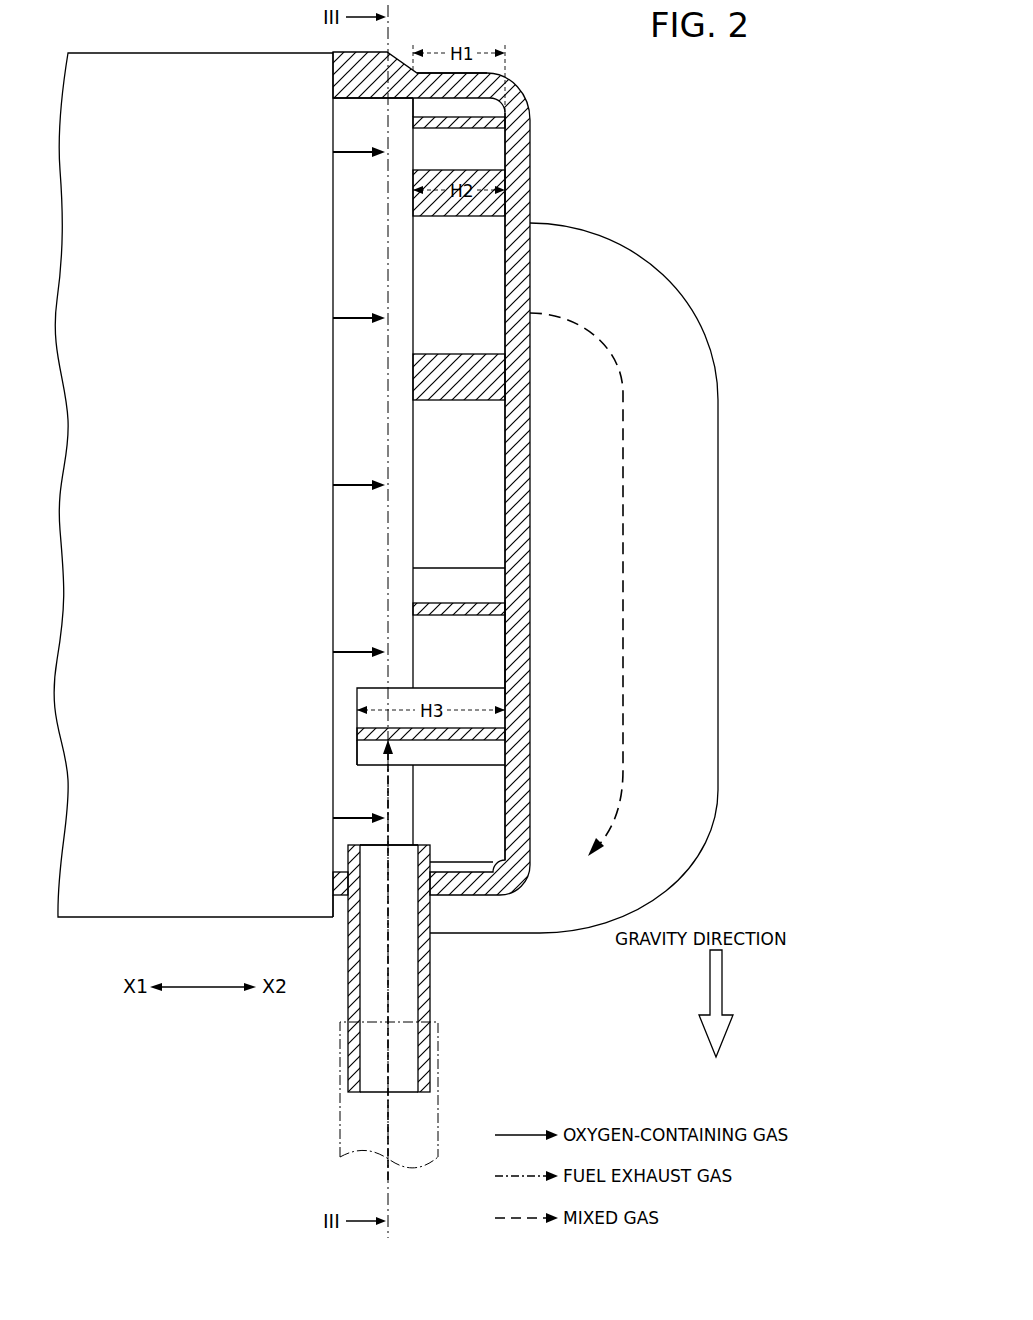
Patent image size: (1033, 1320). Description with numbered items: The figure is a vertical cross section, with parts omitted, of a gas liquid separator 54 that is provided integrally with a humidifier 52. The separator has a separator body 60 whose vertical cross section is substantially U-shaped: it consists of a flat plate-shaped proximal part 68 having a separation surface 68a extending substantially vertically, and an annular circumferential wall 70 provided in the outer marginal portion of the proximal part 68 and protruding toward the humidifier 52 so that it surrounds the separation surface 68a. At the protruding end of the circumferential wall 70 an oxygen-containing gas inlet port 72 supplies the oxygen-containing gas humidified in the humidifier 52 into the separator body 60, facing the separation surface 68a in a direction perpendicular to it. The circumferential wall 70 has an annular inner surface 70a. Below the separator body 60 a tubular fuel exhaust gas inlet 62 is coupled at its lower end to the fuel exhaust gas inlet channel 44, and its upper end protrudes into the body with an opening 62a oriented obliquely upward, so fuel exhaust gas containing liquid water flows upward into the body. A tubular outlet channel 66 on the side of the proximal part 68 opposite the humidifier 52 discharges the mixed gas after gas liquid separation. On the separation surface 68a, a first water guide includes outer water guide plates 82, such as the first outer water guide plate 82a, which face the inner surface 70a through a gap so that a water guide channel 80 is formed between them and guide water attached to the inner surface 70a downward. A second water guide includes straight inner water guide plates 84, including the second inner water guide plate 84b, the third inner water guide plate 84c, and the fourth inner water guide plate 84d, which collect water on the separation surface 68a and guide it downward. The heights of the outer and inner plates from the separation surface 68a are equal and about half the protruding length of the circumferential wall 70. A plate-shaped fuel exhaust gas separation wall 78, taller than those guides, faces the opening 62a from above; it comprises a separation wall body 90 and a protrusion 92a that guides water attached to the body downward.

The fuel exhaust gas inlet channel 44 is at (440, 1115).
The humidifier 52 is at (172, 60).
The gas liquid separator 54 is at (628, 176).
The separator body 60 is at (525, 89).
The fuel exhaust gas inlet 62 is at (425, 975).
The opening 62a is at (380, 845).
The outlet channel 66 is at (628, 262).
The proximal part 68 is at (520, 165).
The separation surface 68a is at (512, 645).
The circumferential wall 70 is at (480, 88).
The inner surface 70a is at (338, 100).
The oxygen-containing gas inlet port 72 is at (333, 170).
The fuel exhaust gas separation wall 78 is at (357, 738).
The water guide channel 80 is at (437, 108).
The outer water guide plates 82 is at (521, 130).
The first outer water guide plate 82a is at (512, 131).
The inner water guide plates 84 is at (371, 395).
The second inner water guide plate 84b is at (413, 203).
The third inner water guide plate 84c is at (413, 380).
The fourth inner water guide plate 84d is at (413, 615).
The separation wall body 90 is at (482, 740).
The protrusion 92a is at (482, 760).